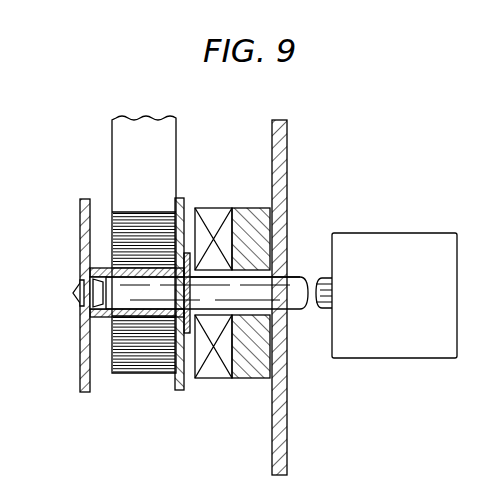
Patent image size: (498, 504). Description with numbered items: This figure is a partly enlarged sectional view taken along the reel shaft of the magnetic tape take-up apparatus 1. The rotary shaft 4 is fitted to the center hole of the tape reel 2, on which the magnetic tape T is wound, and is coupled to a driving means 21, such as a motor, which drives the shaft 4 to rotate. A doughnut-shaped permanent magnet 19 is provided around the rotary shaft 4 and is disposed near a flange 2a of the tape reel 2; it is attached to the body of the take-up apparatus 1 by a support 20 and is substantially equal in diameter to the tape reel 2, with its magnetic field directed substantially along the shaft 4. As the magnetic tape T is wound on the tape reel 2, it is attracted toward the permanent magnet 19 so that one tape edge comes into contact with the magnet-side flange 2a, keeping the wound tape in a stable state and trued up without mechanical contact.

The magnetic tape T is at (116, 150).
The take-up apparatus 1 is at (272, 456).
The tape reel 2 is at (79, 354).
The flange 2a is at (183, 206).
The rotary shaft 4 is at (290, 280).
The permanent magnet 19 is at (211, 382).
The support 20 is at (244, 382).
The driving means 21 is at (400, 236).